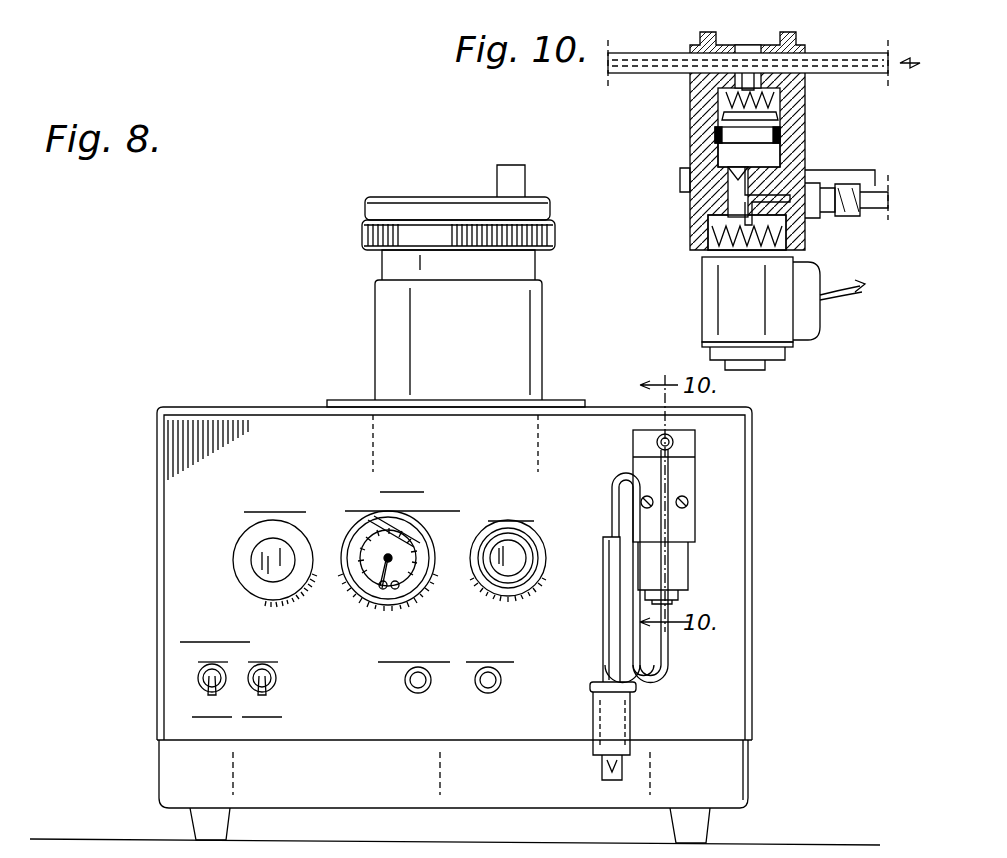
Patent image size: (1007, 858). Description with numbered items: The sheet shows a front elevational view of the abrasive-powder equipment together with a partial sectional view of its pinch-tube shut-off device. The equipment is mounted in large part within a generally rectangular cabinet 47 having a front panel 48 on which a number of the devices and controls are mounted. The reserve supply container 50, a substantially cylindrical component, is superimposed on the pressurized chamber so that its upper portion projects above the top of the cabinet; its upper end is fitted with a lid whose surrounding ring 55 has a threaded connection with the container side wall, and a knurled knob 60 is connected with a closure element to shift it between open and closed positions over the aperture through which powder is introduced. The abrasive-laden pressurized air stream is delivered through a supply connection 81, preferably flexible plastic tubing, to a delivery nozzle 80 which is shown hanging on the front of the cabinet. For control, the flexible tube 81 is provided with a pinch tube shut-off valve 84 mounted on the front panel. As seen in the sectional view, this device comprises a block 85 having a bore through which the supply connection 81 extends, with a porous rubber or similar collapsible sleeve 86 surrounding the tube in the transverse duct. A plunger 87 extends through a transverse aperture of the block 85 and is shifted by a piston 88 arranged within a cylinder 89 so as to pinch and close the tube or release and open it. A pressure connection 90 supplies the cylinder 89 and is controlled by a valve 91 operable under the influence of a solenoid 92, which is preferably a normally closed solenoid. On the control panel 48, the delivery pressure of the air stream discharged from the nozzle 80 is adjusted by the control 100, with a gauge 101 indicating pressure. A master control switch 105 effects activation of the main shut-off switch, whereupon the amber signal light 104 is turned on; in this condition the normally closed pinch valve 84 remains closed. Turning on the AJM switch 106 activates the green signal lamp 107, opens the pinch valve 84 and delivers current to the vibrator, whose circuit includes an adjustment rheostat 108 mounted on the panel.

In FIG. 8, the cabinet 47 is at (140, 489).
In FIG. 8, the front panel 48 is at (205, 418).
In FIG. 8, the reserve supply container 50 is at (543, 336).
In FIG. 8, the ring 55 is at (362, 232).
In FIG. 8, the knurled knob 60 is at (526, 182).
In FIG. 8, the delivery nozzle 80 is at (604, 618).
In FIG. 8, the supply connection 81 is at (612, 487).
In FIG. 10, the supply connection 81 is at (850, 58).
In FIG. 8, the pinch tube shut-off valve 84 is at (688, 476).
In FIG. 10, the pinch tube shut-off valve 84 is at (692, 210).
In FIG. 8, the block 85 is at (692, 444).
In FIG. 10, the block 85 is at (700, 104).
In FIG. 10, the collapsible sleeve 86 is at (765, 50).
In FIG. 10, the plunger 87 is at (760, 74).
In FIG. 10, the piston 88 is at (782, 136).
In FIG. 10, the cylinder 89 is at (722, 157).
In FIG. 10, the pressure connection 90 is at (852, 216).
In FIG. 10, the valve 91 is at (702, 250).
In FIG. 8, the solenoid 92 is at (690, 567).
In FIG. 10, the solenoid 92 is at (710, 304).
In FIG. 8, the control 100 is at (540, 578).
In FIG. 8, the gauge 101 is at (365, 584).
In FIG. 8, the amber signal light 104 is at (406, 684).
In FIG. 8, the master control switch 105 is at (198, 678).
In FIG. 8, the AJM switch 106 is at (276, 680).
In FIG. 8, the green signal lamp 107 is at (486, 693).
In FIG. 8, the adjustment rheostat 108 is at (262, 568).